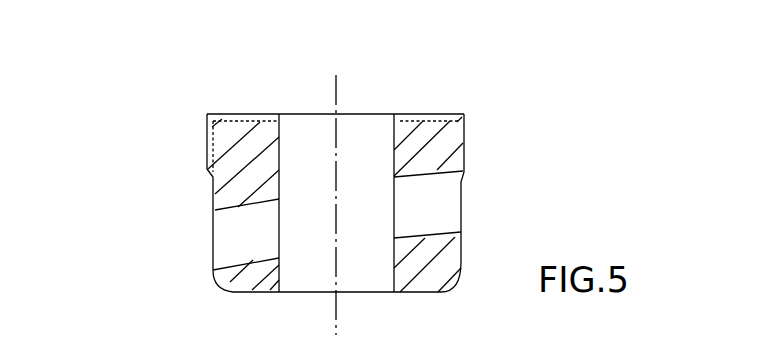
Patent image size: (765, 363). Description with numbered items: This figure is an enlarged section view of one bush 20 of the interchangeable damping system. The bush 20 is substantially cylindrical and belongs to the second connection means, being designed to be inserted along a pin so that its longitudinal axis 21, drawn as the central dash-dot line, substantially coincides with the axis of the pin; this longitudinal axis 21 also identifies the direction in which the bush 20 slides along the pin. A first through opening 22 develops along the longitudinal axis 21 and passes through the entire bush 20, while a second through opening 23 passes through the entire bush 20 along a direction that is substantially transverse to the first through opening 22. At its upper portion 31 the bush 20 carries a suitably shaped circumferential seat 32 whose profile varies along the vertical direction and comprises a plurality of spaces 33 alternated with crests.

The bush 20 is at (145, 197).
The longitudinal axis 21 is at (340, 99).
The first through opening 22 is at (283, 153).
The second through opening 23 is at (423, 227).
The upper portion 31 is at (488, 137).
The circumferential seat 32 is at (220, 110).
The spaces 33 is at (246, 111).